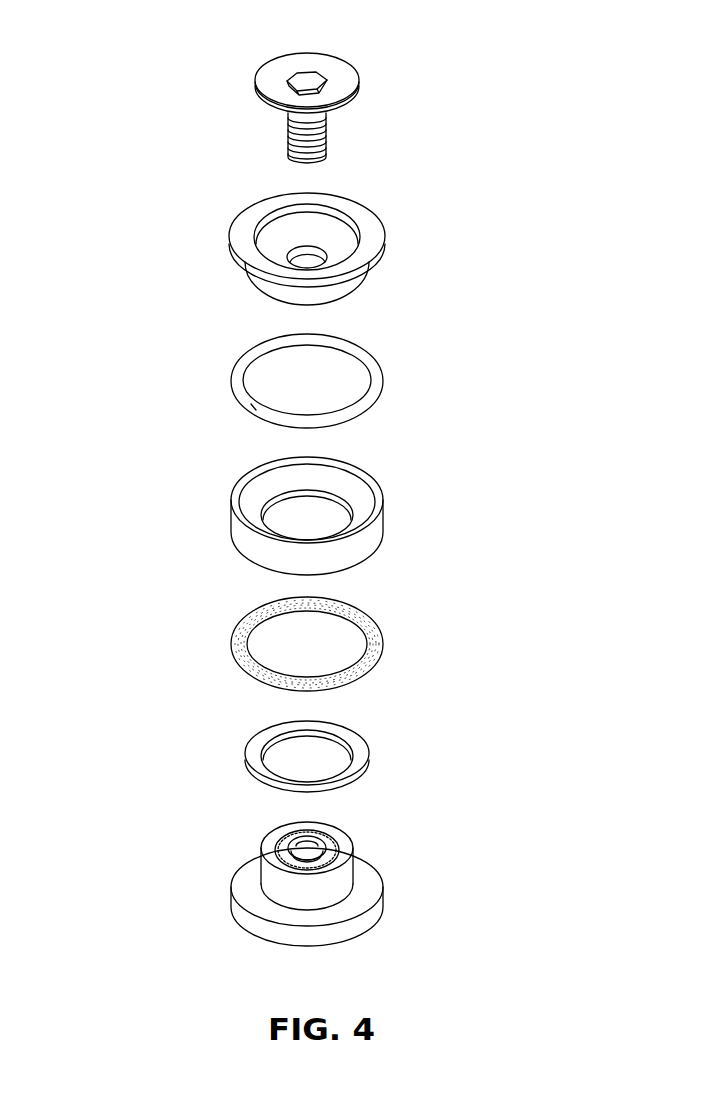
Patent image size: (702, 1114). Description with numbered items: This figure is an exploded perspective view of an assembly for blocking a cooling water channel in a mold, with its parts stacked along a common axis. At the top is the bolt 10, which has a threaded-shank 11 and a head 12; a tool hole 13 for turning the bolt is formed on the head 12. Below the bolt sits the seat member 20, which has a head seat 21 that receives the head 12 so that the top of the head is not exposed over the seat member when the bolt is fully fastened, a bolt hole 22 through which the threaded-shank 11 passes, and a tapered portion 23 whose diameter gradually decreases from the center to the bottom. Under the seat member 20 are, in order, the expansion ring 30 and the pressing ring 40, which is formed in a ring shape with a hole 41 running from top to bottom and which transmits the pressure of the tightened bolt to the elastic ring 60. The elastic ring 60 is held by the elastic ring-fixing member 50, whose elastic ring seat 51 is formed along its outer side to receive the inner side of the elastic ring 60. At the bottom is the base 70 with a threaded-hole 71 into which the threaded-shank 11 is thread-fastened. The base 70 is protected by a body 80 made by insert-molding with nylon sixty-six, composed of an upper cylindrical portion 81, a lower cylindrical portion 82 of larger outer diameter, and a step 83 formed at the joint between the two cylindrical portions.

The bolt 10 is at (522, 38).
The threaded-shank 11 is at (313, 140).
The head 12 is at (340, 92).
The tool hole 13 is at (308, 87).
The seat member 20 is at (122, 200).
The head seat 21 is at (278, 232).
The bolt hole 22 is at (300, 262).
The tapered portion 23 is at (262, 292).
The expansion ring 30 is at (377, 370).
The pressing ring 40 is at (232, 517).
The hole 41 is at (293, 520).
The elastic ring-fixing member 50 is at (242, 752).
The elastic ring seat 51 is at (248, 775).
The elastic ring 60 is at (377, 643).
The base 70 is at (340, 850).
The threaded-hole 71 is at (318, 850).
The body 80 is at (112, 853).
The upper cylindrical portion 81 is at (273, 872).
The lower cylindrical portion 82 is at (273, 930).
The step 83 is at (257, 900).